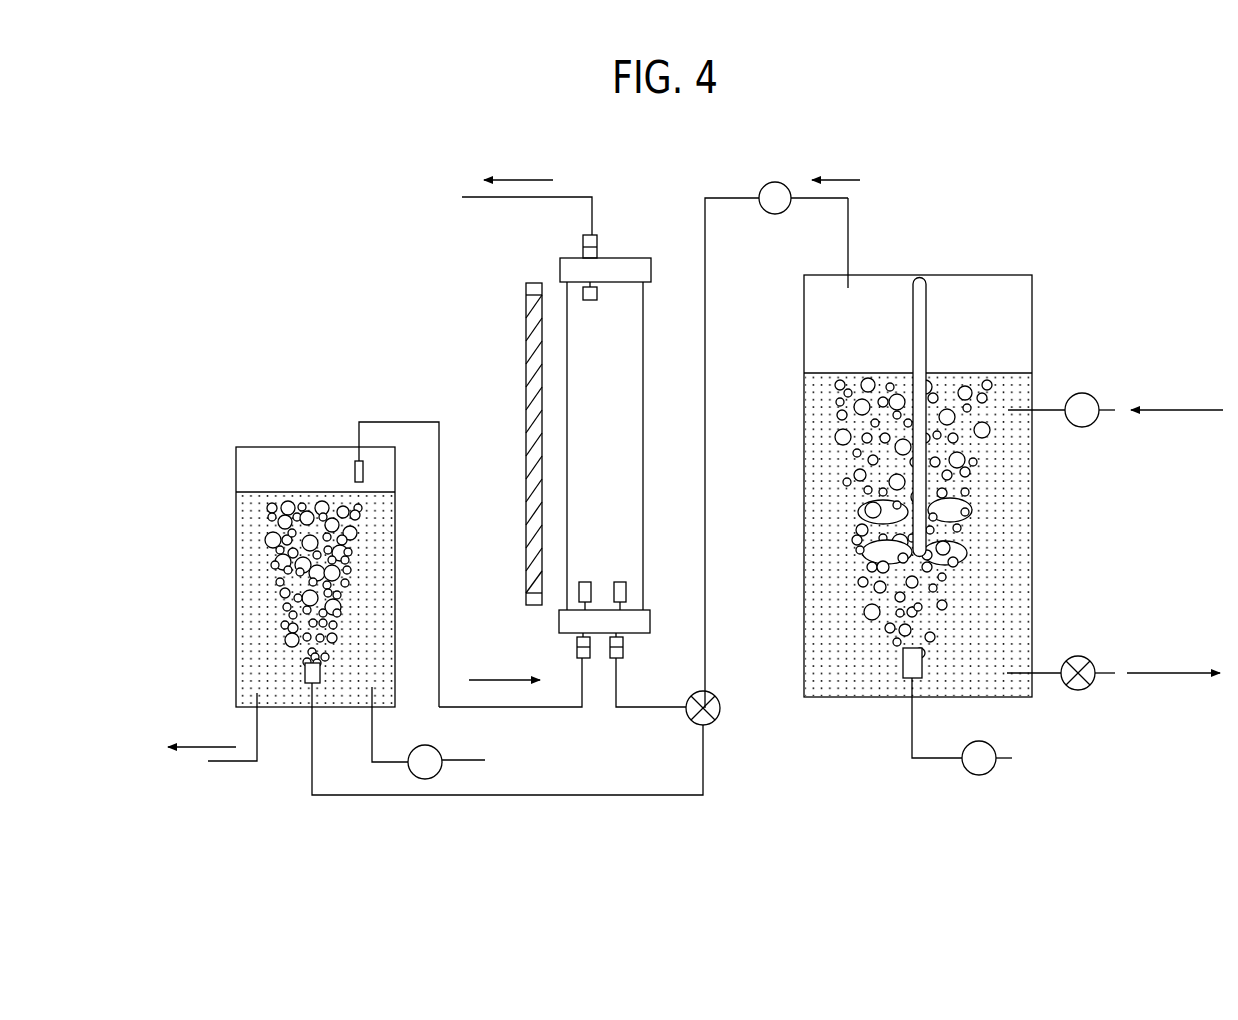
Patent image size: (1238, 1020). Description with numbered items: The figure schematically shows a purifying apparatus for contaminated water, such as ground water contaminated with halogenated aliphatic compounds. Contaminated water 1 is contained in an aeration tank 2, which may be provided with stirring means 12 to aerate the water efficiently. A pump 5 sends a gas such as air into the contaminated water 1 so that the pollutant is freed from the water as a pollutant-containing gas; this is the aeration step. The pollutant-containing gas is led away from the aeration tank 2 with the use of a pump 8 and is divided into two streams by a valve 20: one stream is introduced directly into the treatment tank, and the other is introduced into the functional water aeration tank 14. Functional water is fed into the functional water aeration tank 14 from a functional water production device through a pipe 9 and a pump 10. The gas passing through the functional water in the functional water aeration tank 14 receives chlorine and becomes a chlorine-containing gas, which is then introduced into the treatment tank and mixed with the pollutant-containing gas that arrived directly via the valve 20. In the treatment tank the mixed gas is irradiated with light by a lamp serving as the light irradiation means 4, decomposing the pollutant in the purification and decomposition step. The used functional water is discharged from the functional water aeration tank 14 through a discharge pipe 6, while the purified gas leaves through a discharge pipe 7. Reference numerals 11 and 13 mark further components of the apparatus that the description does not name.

The contaminated water 1 is at (1017, 532).
The aeration tank 2 is at (1003, 285).
The light irradiation means 4 is at (526, 330).
The pump 5 is at (975, 775).
The discharge pipe 6 is at (230, 760).
The discharge pipe 7 is at (507, 198).
The pump 8 is at (783, 182).
The pipe 9 is at (470, 762).
The pump 10 is at (442, 757).
The inlet valve 11 is at (1097, 397).
The stirring means 12 is at (930, 288).
The valve 13 is at (1092, 660).
The functional water aeration tank 14 is at (272, 452).
The valve 20 is at (720, 710).